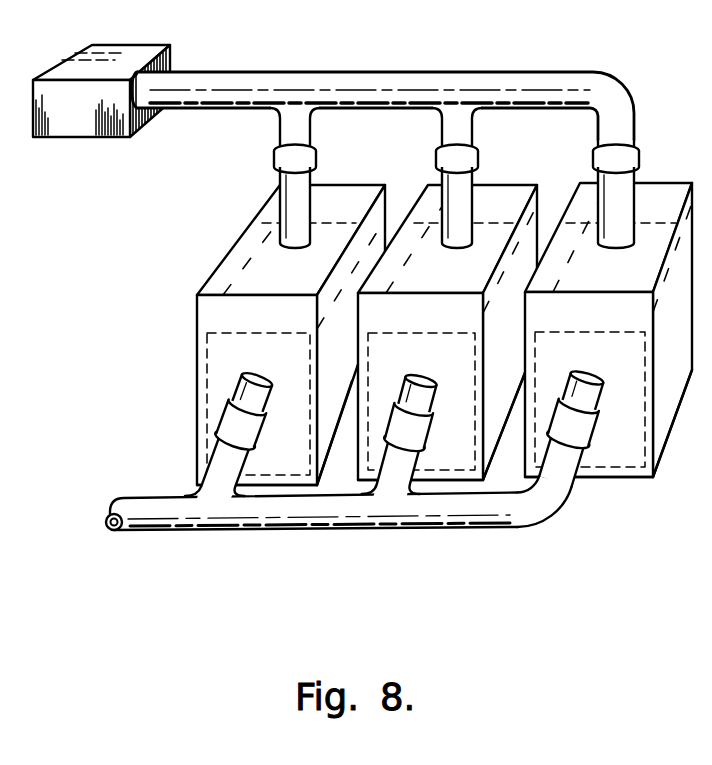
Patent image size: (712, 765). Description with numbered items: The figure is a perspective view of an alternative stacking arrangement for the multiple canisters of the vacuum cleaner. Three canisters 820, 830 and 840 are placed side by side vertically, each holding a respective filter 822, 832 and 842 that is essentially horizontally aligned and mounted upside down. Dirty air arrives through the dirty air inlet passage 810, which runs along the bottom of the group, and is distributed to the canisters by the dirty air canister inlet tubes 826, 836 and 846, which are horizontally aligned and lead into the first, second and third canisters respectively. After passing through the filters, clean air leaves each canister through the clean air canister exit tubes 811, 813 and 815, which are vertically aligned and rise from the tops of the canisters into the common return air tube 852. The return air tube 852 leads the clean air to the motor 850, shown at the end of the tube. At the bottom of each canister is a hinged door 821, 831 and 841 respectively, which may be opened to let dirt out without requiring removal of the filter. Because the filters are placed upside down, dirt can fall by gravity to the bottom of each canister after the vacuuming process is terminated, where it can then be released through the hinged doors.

The dirty air inlet passage 810 is at (270, 531).
The clean air canister exit tube 811 is at (305, 196).
The clean air canister exit tube 813 is at (461, 204).
The clean air canister exit tube 815 is at (613, 200).
The canister 820 is at (308, 275).
The hinged door 821 is at (345, 482).
The filter 822 is at (183, 368).
The dirty air canister inlet tube 826 is at (223, 463).
The canister 830 is at (418, 275).
The hinged door 831 is at (500, 476).
The filter 832 is at (449, 331).
The dirty air canister inlet tube 836 is at (436, 492).
The canister 840 is at (573, 283).
The hinged door 841 is at (590, 483).
The filter 842 is at (614, 332).
The dirty air canister inlet tube 846 is at (580, 466).
The motor 850 is at (48, 117).
The return air tube 852 is at (358, 86).